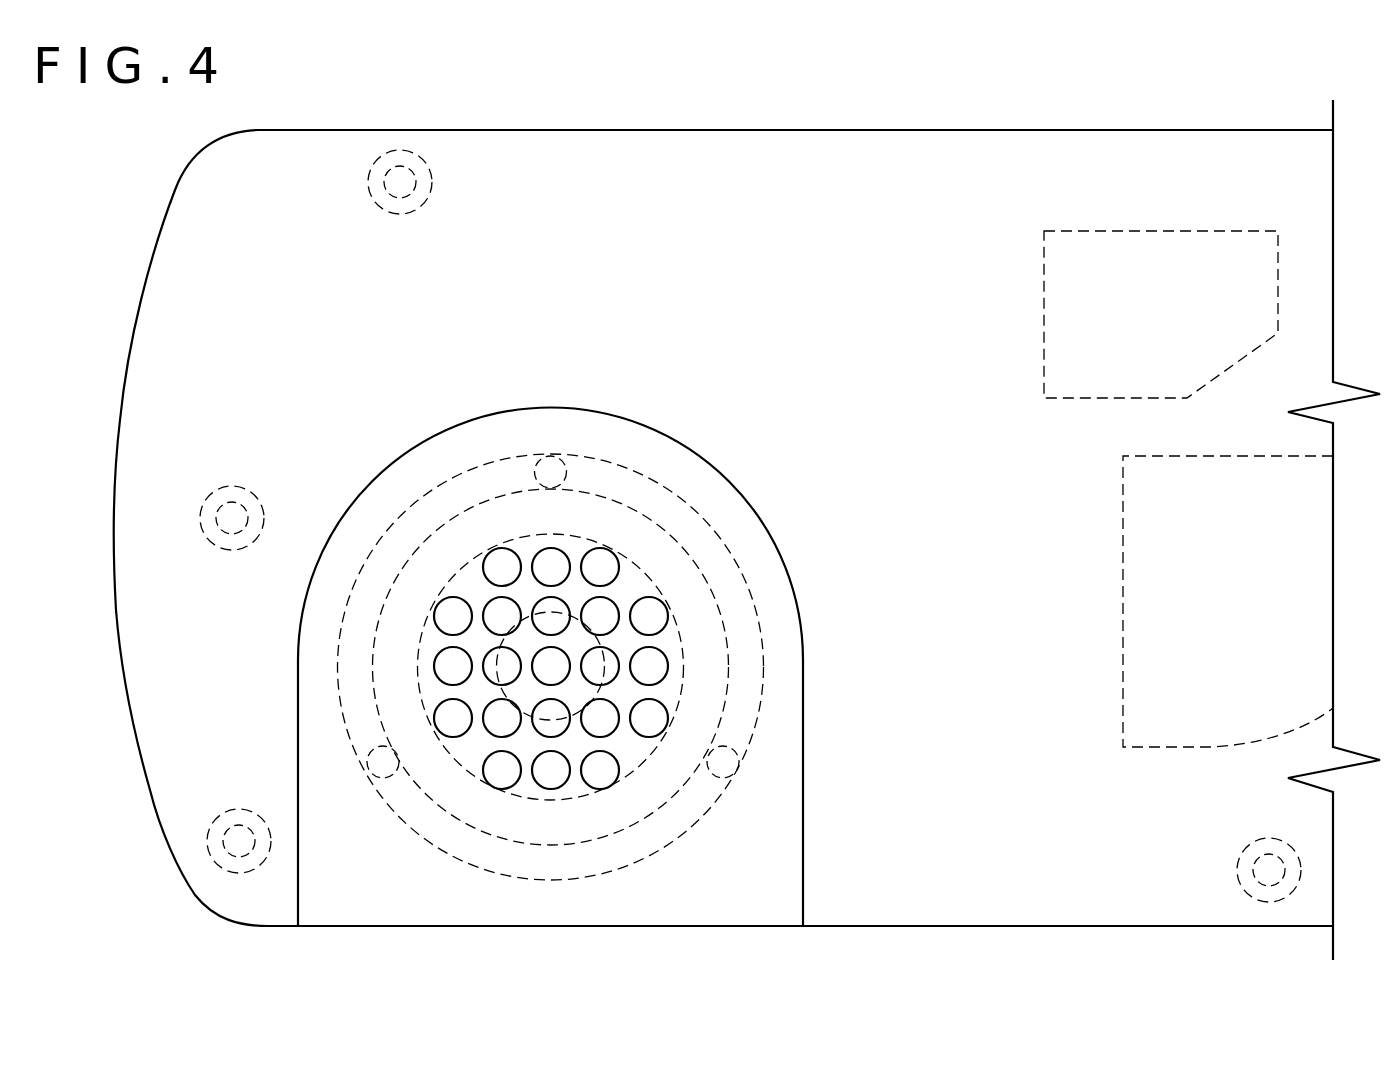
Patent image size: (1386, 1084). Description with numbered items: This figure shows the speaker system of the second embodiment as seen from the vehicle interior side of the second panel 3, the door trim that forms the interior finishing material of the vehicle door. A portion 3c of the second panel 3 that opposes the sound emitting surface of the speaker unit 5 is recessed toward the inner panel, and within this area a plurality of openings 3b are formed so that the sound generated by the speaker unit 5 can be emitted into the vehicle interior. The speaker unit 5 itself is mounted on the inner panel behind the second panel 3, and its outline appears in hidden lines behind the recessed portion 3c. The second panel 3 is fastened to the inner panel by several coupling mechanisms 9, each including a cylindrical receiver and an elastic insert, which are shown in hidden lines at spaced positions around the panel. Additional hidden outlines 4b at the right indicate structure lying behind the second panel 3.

The second panel 3 is at (183, 211).
The openings 3b is at (657, 672).
The portion of the second panel 3c is at (743, 623).
The component outline 4b is at (1085, 392).
The speaker unit 5 is at (712, 540).
The coupling mechanisms 9 is at (432, 185).